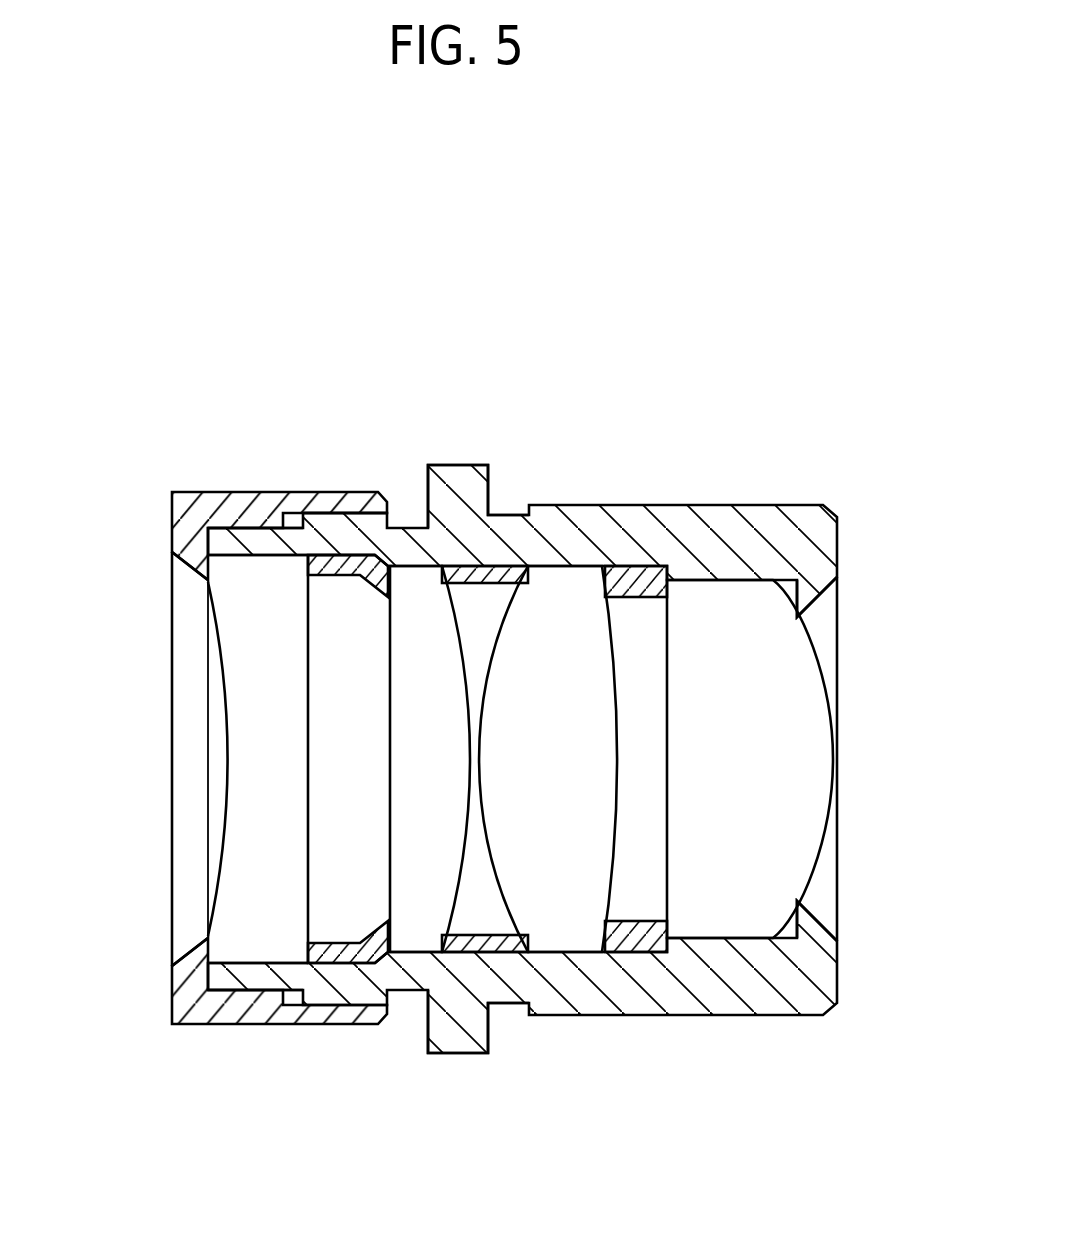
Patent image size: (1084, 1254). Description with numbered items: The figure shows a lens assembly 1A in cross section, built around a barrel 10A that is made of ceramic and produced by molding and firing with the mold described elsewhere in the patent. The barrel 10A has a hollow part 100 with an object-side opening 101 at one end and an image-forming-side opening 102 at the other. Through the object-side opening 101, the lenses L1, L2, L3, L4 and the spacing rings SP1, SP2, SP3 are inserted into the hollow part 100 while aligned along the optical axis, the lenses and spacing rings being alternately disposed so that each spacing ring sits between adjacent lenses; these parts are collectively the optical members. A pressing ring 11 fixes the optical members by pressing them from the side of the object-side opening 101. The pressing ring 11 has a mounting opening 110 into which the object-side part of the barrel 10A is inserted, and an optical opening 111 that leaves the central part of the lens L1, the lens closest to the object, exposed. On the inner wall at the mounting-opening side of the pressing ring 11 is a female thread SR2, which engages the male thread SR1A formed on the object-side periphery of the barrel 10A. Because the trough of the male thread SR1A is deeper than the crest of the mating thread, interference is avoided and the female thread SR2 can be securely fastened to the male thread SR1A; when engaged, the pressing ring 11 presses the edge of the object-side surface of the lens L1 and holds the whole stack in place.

The lens assembly 1A is at (608, 252).
The barrel 10A is at (718, 525).
The pressing ring 11 is at (213, 500).
The hollow part 100 is at (556, 566).
The object-side opening 101 is at (241, 538).
The image-forming-side opening 102 is at (837, 597).
The mounting opening 110 is at (387, 500).
The optical opening 111 is at (174, 558).
The lens L1 is at (252, 918).
The lens L2 is at (406, 926).
The lens L3 is at (567, 920).
The lens L4 is at (733, 917).
The spacing ring SP1 is at (375, 922).
The spacing ring SP2 is at (487, 576).
The spacing ring SP3 is at (627, 943).
The male thread SR1A is at (325, 533).
The female thread SR2 is at (357, 505).